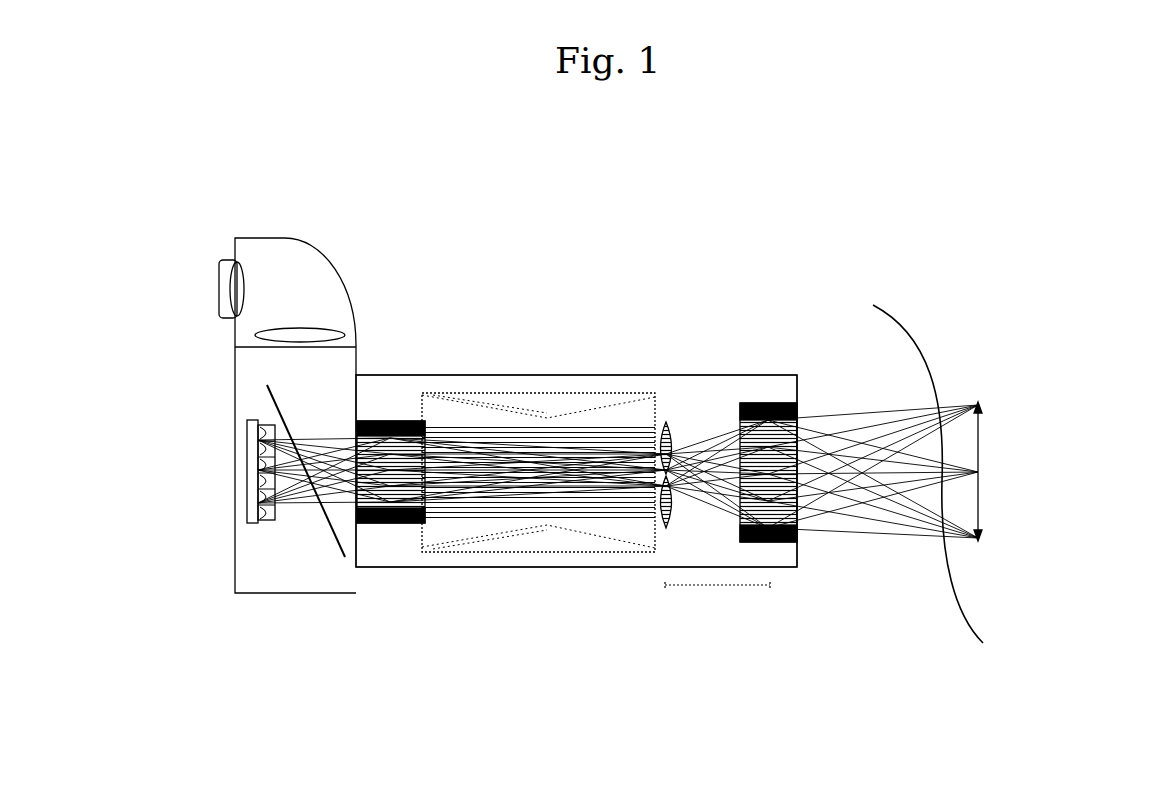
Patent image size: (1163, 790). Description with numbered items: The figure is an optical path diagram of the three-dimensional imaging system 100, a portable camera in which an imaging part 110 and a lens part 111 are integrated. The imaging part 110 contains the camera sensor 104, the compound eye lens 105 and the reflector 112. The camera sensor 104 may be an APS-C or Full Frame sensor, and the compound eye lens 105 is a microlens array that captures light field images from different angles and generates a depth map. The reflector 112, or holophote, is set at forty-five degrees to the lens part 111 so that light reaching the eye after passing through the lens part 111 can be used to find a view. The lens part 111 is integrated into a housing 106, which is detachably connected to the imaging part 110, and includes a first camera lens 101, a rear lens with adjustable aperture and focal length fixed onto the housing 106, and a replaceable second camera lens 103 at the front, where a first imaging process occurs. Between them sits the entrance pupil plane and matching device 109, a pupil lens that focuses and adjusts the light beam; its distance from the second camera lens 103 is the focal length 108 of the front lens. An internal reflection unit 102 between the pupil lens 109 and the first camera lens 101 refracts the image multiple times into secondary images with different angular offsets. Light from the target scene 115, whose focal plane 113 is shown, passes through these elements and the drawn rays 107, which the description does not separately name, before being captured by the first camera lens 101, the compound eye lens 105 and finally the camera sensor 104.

The 3D imaging system 100 is at (1032, 275).
The first camera lens 101 is at (395, 390).
The internal reflection unit 102 is at (553, 375).
The second camera lens 103 is at (768, 400).
The camera sensor 104 is at (250, 495).
The compound eye lens 105 is at (265, 522).
The housing 106 is at (452, 567).
The light rays 107 is at (560, 523).
The focal length 108 is at (728, 588).
The entrance pupil plane and matching device 109 is at (672, 375).
The imaging part 110 is at (313, 296).
The lens part 111 is at (573, 268).
The reflector 112 is at (270, 410).
The focal plane 113 is at (1003, 482).
The target scene 115 is at (940, 627).